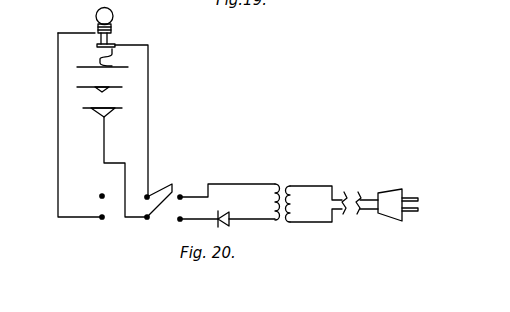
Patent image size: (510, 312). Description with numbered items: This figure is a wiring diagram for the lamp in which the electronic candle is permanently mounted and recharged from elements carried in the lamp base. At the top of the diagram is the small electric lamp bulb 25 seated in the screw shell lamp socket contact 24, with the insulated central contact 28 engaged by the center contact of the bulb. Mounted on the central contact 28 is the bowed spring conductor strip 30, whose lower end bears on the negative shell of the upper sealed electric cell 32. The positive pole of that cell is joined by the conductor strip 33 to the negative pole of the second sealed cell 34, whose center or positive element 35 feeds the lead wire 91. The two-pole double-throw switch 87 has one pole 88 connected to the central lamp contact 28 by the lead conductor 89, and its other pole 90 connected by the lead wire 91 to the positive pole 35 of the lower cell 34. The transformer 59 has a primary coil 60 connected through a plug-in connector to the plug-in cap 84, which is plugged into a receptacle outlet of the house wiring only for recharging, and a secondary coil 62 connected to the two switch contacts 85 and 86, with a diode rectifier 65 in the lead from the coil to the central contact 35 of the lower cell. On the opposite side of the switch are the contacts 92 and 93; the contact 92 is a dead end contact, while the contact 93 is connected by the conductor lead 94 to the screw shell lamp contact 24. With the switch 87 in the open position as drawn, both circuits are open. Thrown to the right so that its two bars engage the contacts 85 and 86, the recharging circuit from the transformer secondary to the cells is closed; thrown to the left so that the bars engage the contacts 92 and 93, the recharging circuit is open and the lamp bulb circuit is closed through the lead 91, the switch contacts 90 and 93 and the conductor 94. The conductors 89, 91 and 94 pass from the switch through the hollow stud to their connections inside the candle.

The screw shell lamp socket contact 24 is at (95, 32).
The electric lamp bulb 25 is at (109, 15).
The central contact 28 is at (113, 46).
The spring conductor strip 30 is at (113, 63).
The sealed type electric cell 32 is at (125, 77).
The conductor strip 33 is at (121, 88).
The second sealed cell 34 is at (122, 102).
The positive element 35 is at (110, 117).
The transformer 59 is at (284, 175).
The primary coil 60 is at (296, 209).
The secondary coil 62 is at (269, 199).
The diode rectifier 65 is at (228, 224).
The plug-in cap 84 is at (390, 196).
The switch contact 85 is at (185, 190).
The switch contact 86 is at (181, 221).
The two-pole double-throw switch 87 is at (153, 187).
The switch pole 88 is at (142, 190).
The lead conductor 89 is at (150, 137).
The switch pole 90 is at (146, 228).
The lead wire 91 is at (104, 147).
The dead end contact 92 is at (101, 193).
The switch contact 93 is at (101, 218).
The conductor lead 94 is at (55, 165).